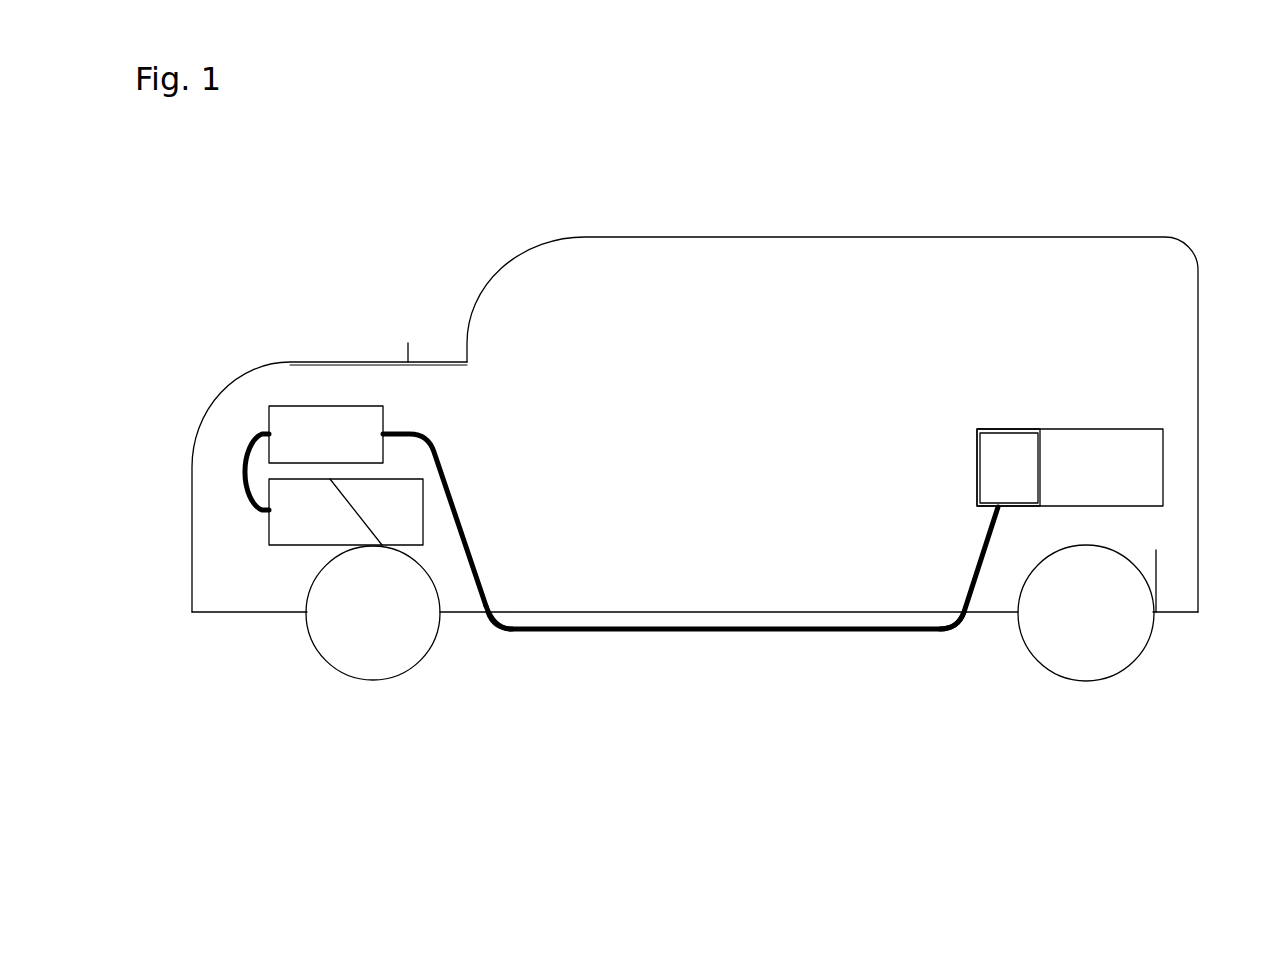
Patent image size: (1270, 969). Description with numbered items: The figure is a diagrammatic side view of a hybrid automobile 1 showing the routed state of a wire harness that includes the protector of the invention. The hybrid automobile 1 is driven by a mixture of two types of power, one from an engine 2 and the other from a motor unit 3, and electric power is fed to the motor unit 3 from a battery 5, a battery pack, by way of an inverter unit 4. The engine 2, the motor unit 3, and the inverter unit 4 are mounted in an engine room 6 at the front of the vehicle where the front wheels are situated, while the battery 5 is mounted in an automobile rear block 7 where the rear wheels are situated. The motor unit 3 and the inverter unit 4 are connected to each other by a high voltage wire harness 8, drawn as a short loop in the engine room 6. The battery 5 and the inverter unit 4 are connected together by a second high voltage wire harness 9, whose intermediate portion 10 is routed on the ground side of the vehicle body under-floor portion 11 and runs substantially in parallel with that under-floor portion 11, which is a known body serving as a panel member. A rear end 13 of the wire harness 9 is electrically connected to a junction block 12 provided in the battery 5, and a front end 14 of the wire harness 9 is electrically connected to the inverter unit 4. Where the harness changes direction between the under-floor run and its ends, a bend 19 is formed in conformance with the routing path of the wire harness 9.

The hybrid automobile 1 is at (380, 250).
The engine 2 is at (398, 530).
The motor unit 3 is at (295, 528).
The inverter unit 4 is at (320, 428).
The battery 5 is at (1108, 458).
The engine room 6 is at (215, 568).
The automobile rear block 7 is at (1173, 537).
The high voltage wire harness 8 is at (242, 463).
The high voltage wire harness 9 is at (688, 637).
The intermediate portion 10 is at (745, 633).
The vehicle body under-floor portion 11 is at (838, 614).
The junction block 12 is at (1005, 458).
The rear end 13 is at (992, 522).
The front end 14 is at (398, 432).
The bend 19 is at (497, 632).